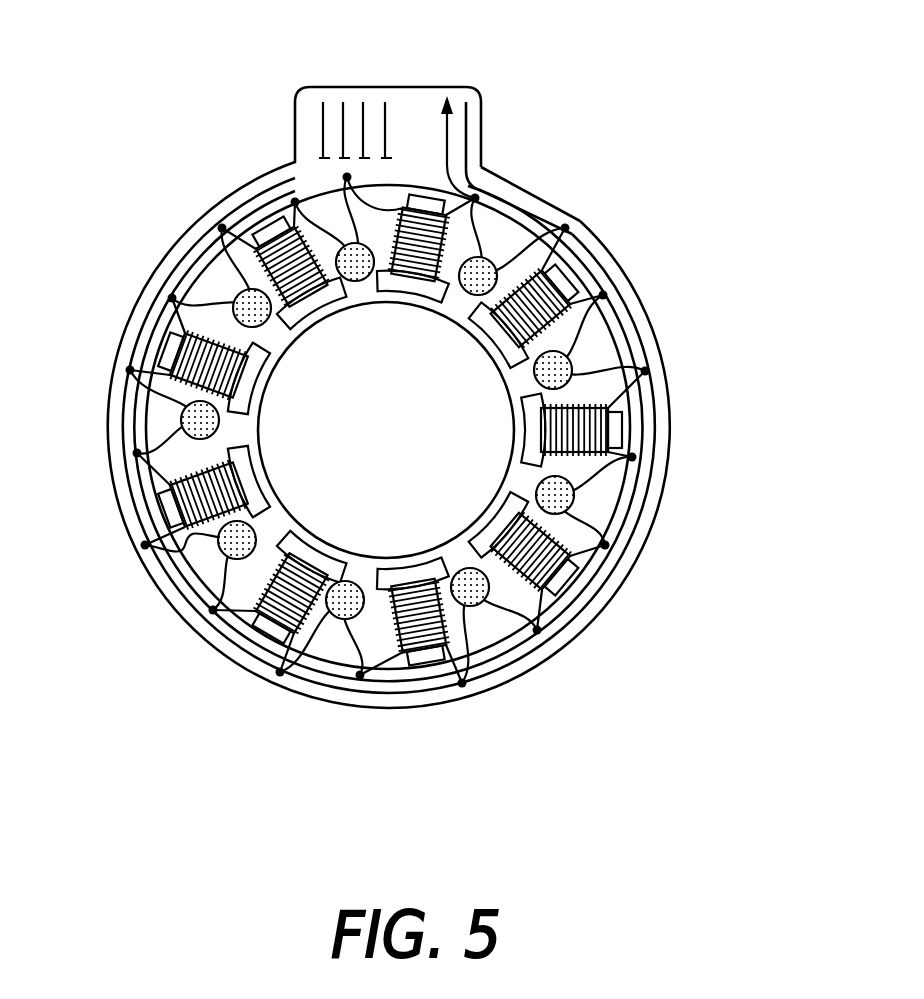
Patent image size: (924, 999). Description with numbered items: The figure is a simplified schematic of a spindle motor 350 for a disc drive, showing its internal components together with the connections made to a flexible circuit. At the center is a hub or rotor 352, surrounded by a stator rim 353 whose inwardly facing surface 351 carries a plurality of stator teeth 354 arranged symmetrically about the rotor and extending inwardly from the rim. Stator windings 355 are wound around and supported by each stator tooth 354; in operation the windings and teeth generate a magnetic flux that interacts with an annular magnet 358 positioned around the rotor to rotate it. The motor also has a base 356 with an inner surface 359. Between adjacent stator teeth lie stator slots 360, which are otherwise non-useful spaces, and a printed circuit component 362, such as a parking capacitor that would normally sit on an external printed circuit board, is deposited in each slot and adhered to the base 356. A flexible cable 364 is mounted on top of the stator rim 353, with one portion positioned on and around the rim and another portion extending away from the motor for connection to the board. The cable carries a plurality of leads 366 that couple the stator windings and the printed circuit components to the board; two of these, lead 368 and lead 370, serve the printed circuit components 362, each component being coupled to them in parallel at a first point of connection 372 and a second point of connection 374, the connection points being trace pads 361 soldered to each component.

The spindle motor 350 is at (665, 126).
The inwardly facing surface 351 is at (362, 637).
The rotor 352 is at (312, 440).
The stator rim 353 is at (317, 620).
The stator teeth 354 is at (645, 370).
The stator windings 355 is at (600, 617).
The base 356 is at (198, 316).
The annular magnet 358 is at (224, 553).
The inner surface 359 is at (346, 244).
The stator slots 360 is at (379, 642).
The trace pads 361 is at (574, 220).
The printed circuit components 362 is at (181, 418).
The flexible cable 364 is at (490, 204).
The leads 366 is at (458, 74).
The lead 368 is at (600, 262).
The lead 370 is at (598, 282).
The first point of connection 372 is at (463, 687).
The second point of connection 374 is at (539, 632).